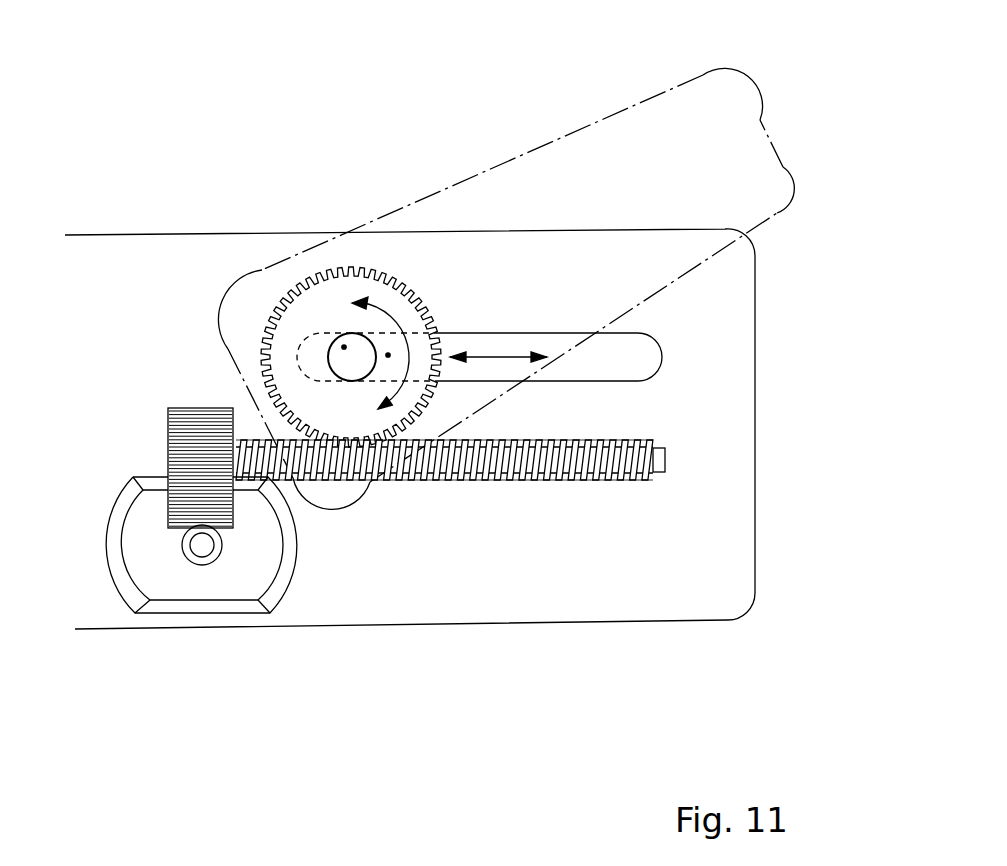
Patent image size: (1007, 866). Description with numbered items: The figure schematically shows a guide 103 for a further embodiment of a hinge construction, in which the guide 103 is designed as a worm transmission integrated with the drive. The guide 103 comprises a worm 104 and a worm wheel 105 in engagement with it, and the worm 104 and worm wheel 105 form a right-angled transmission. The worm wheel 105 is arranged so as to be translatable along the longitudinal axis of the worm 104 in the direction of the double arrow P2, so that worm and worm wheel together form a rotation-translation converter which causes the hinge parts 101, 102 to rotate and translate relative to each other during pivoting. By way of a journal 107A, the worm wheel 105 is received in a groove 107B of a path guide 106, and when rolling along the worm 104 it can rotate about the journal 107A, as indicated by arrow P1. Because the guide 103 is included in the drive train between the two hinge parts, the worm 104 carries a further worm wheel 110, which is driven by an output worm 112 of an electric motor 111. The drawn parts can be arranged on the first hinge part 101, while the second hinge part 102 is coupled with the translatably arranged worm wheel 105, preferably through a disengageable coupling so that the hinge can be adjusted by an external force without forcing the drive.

The first hinge part 101 is at (668, 622).
The second hinge part 102 is at (617, 110).
The guide 103 is at (423, 433).
The worm 104 is at (546, 482).
The worm wheel 105 is at (295, 316).
The path guide 106 is at (388, 355).
The journal 107A is at (342, 359).
The groove 107B is at (619, 354).
The further worm wheel 110 is at (168, 425).
The electric motor 111 is at (148, 614).
The output worm 112 is at (202, 565).
The direction of rotation P1 is at (390, 317).
The double arrow of translation direction P2 is at (498, 357).